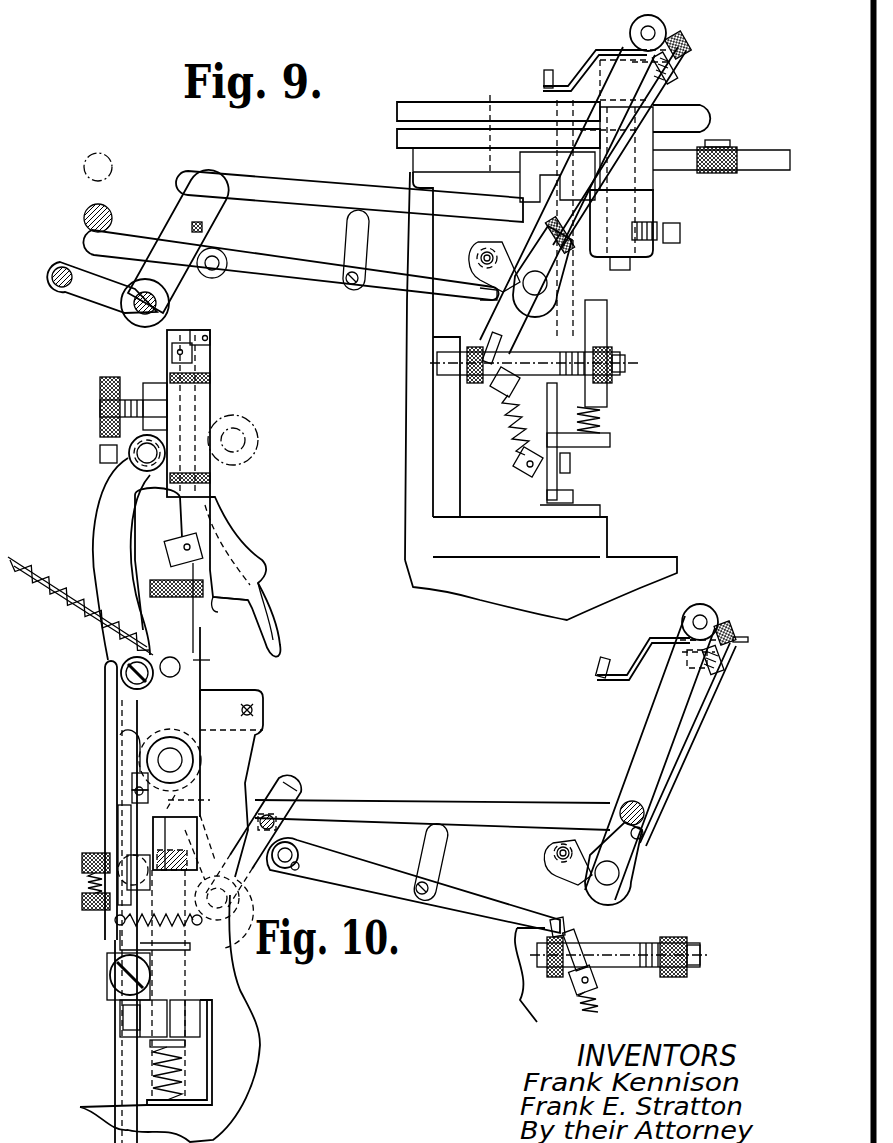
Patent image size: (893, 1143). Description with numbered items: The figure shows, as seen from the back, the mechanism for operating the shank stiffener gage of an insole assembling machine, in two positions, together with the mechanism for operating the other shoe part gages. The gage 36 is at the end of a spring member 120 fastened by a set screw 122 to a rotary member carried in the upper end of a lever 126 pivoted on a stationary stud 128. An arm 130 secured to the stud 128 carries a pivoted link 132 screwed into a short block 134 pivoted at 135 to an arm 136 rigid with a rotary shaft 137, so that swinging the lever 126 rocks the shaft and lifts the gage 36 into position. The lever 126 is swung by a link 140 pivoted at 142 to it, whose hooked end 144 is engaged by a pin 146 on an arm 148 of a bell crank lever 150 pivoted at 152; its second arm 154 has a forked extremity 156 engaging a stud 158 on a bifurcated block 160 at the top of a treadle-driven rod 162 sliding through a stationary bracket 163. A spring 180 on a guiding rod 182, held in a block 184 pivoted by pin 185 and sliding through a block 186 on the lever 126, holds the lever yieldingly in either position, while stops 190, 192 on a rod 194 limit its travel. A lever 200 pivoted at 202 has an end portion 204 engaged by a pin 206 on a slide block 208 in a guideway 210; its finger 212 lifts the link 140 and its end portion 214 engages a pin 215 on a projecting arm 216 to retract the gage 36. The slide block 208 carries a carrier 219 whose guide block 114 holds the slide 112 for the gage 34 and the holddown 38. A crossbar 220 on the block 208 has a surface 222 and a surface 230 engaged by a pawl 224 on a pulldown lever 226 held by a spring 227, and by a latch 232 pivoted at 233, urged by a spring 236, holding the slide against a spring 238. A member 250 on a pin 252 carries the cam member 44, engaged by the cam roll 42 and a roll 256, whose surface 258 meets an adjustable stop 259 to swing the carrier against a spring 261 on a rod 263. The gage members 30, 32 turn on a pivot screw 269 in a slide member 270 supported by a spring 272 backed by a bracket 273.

In FIG. 9, the gage member 30 is at (437, 110).
In FIG. 9, the gage member 32 is at (425, 145).
In FIG. 10, the positioning or gage member 34 is at (252, 585).
In FIG. 9, the positioning or gage member 36 is at (543, 75).
In FIG. 10, the positioning or gage member 36 is at (598, 678).
In FIG. 10, the holddown 38 is at (262, 565).
In FIG. 10, the cam roll 42 is at (255, 450).
In FIG. 10, the cam member 44 is at (277, 635).
In FIG. 10, the bar or slide 112 is at (195, 455).
In FIG. 10, the guide block 114 is at (195, 398).
In FIG. 9, the spring member 120 is at (590, 56).
In FIG. 10, the spring member 120 is at (660, 640).
In FIG. 9, the set screw 122 is at (610, 80).
In FIG. 10, the set screw 122 is at (690, 648).
In FIG. 9, the lever 126 is at (572, 178).
In FIG. 10, the lever 126 is at (648, 735).
In FIG. 9, the stationary stud 128 is at (547, 283).
In FIG. 10, the stationary stud 128 is at (620, 874).
In FIG. 9, the arm 130 is at (538, 242).
In FIG. 10, the arm 130 is at (636, 852).
In FIG. 9, the link 132 is at (622, 143).
In FIG. 10, the link 132 is at (675, 752).
In FIG. 9, the short block 134 is at (677, 67).
In FIG. 10, the short block 134 is at (722, 652).
In FIG. 10, the pivot 135 is at (740, 636).
In FIG. 9, the arm 136 is at (688, 44).
In FIG. 10, the arm 136 is at (727, 622).
In FIG. 9, the rotary shaft 137 is at (657, 33).
In FIG. 10, the rotary shaft 137 is at (701, 612).
In FIG. 9, the link 140 is at (323, 192).
In FIG. 10, the link 140 is at (468, 806).
In FIG. 10, the pivot 142 is at (628, 803).
In FIG. 9, the hooked end 144 is at (178, 185).
In FIG. 10, the hooked end 144 is at (270, 790).
In FIG. 9, the pin 146 is at (106, 208).
In FIG. 10, the pin 146 is at (278, 822).
In FIG. 10, the arm 148 is at (298, 782).
In FIG. 10, the bell crank lever 150 is at (284, 868).
In FIG. 9, the pivot 152 is at (138, 312).
In FIG. 10, the pivot 152 is at (240, 901).
In FIG. 10, the second arm 154 is at (232, 945).
In FIG. 9, the forked extremity 156 is at (68, 262).
In FIG. 10, the forked extremity 156 is at (127, 868).
In FIG. 9, the stud 158 is at (55, 282).
In FIG. 10, the stud 158 is at (118, 872).
In FIG. 10, the bifurcated block 160 is at (118, 922).
In FIG. 10, the rod 162 is at (115, 1060).
In FIG. 10, the stationary bracket 163 is at (110, 968).
In FIG. 9, the spring 180 is at (505, 420).
In FIG. 10, the spring 180 is at (600, 1000).
In FIG. 9, the guiding rod 182 is at (500, 350).
In FIG. 10, the guiding rod 182 is at (590, 940).
In FIG. 9, the block 184 is at (517, 460).
In FIG. 9, the pin 185 is at (525, 470).
In FIG. 9, the block 186 is at (500, 392).
In FIG. 10, the block 186 is at (597, 978).
In FIG. 9, the stop 190 is at (470, 380).
In FIG. 10, the stop 190 is at (556, 978).
In FIG. 9, the stop 192 is at (612, 375).
In FIG. 10, the stop 192 is at (668, 978).
In FIG. 9, the rod 194 is at (437, 358).
In FIG. 10, the rod 194 is at (625, 950).
In FIG. 9, the lever 200 is at (305, 282).
In FIG. 10, the lever 200 is at (363, 872).
In FIG. 9, the pivot 202 is at (212, 272).
In FIG. 10, the pivot 202 is at (298, 868).
In FIG. 10, the end portion 204 is at (185, 800).
In FIG. 10, the pin 206 is at (188, 758).
In FIG. 10, the slide block 208 is at (195, 787).
In FIG. 10, the guideway 210 is at (188, 855).
In FIG. 9, the finger 212 is at (365, 250).
In FIG. 10, the finger 212 is at (443, 852).
In FIG. 9, the end portion 214 is at (483, 296).
In FIG. 10, the end portion 214 is at (555, 918).
In FIG. 9, the pin 215 is at (480, 255).
In FIG. 10, the pin 215 is at (556, 852).
In FIG. 9, the projecting arm 216 is at (480, 262).
In FIG. 10, the projecting arm 216 is at (553, 862).
In FIG. 10, the carrier 219 is at (208, 660).
In FIG. 10, the crossbar 220 is at (135, 792).
In FIG. 10, the surface 222 is at (135, 800).
In FIG. 10, the pawl 224 is at (132, 780).
In FIG. 10, the pulldown lever 226 is at (105, 690).
In FIG. 10, the spring 227 is at (82, 898).
In FIG. 10, the surface 230 is at (120, 745).
In FIG. 10, the latch 232 is at (118, 828).
In FIG. 10, the pivot 233 is at (108, 988).
In FIG. 10, the spring 236 is at (190, 947).
In FIG. 10, the spring 238 is at (195, 845).
In FIG. 10, the member 250 is at (98, 548).
In FIG. 10, the pin 252 is at (130, 458).
In FIG. 10, the roll 256 is at (122, 668).
In FIG. 10, the surface 258 is at (218, 610).
In FIG. 10, the adjustable stop 259 is at (175, 660).
In FIG. 10, the spring 261 is at (42, 598).
In FIG. 10, the rod 263 is at (250, 702).
In FIG. 9, the pivot screw 269 is at (672, 104).
In FIG. 9, the slide member 270 is at (610, 325).
In FIG. 9, the spring 272 is at (602, 418).
In FIG. 9, the bracket 273 is at (610, 442).